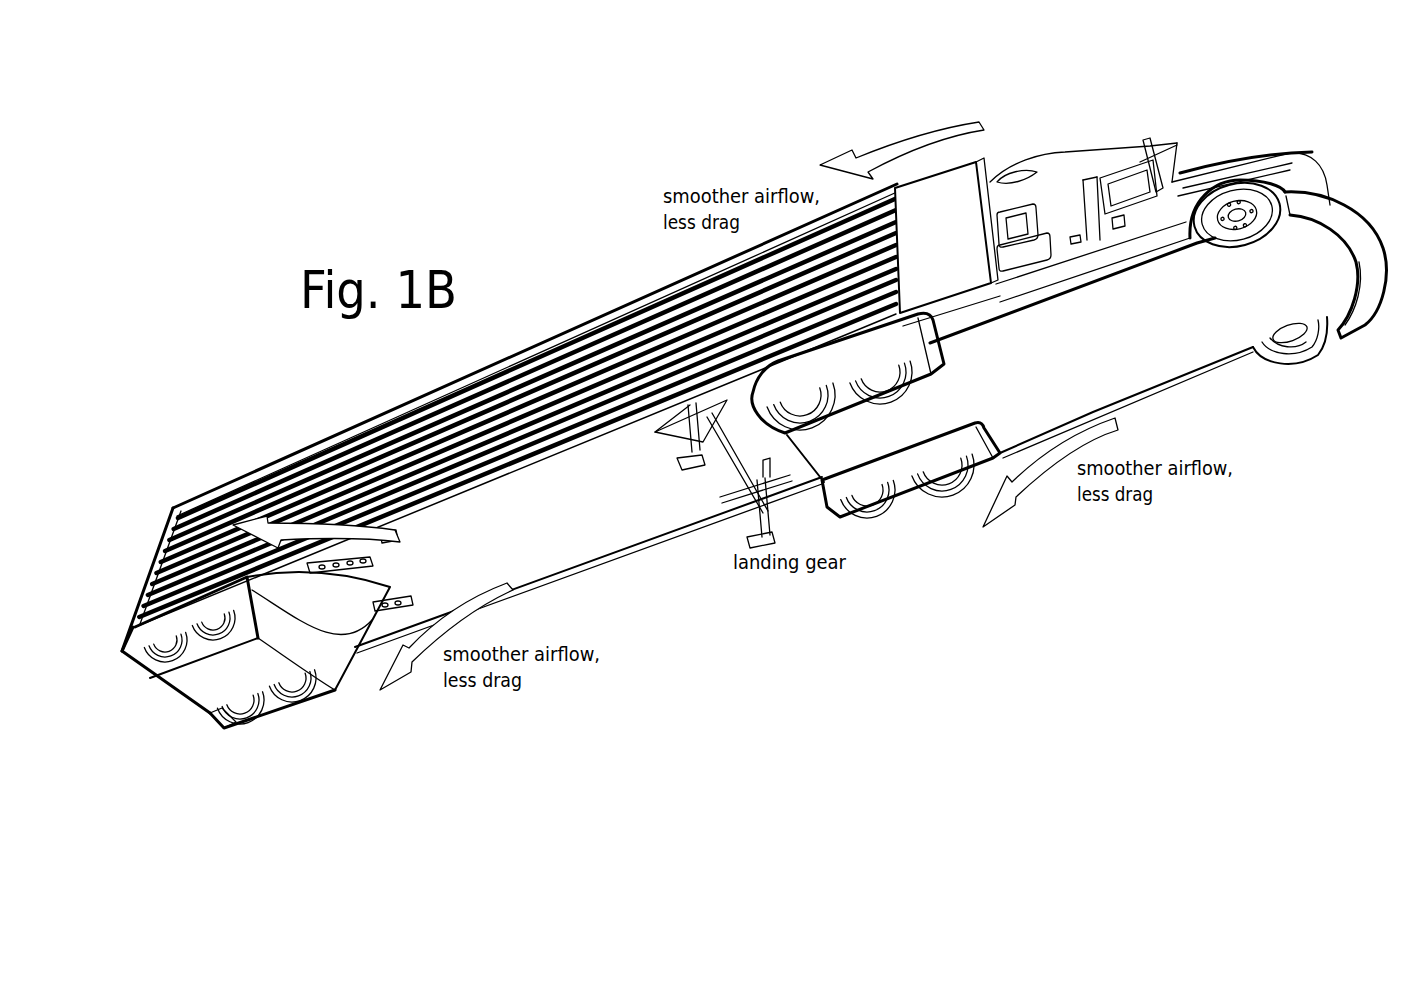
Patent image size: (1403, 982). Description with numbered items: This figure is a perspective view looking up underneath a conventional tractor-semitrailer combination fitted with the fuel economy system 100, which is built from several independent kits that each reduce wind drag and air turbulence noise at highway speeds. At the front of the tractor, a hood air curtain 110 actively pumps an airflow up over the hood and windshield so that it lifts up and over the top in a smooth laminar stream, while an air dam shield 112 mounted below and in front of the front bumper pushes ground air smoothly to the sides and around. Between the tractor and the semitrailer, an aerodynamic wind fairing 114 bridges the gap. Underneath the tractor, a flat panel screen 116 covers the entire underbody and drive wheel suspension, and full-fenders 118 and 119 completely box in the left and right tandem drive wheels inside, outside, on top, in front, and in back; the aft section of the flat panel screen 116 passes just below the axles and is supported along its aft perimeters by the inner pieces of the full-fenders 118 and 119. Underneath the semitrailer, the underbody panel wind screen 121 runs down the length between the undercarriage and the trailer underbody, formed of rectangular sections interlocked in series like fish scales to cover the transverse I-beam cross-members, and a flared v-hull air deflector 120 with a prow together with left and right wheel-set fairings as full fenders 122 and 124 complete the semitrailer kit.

The fuel economy system 100 is at (917, 620).
The hood air curtain 110 is at (1307, 157).
The air dam shield 112 is at (1363, 220).
The aerodynamic wind fairing 114 is at (951, 233).
The flat panel screen 116 is at (1160, 349).
The full-fender 118 is at (903, 493).
The full-fender 119 is at (866, 356).
The flared v-hull air deflector 120 is at (260, 676).
The underbody panel wind screen 121 is at (557, 517).
The wheel-set fairing 122 is at (273, 713).
The wheel-set fairing 124 is at (158, 632).